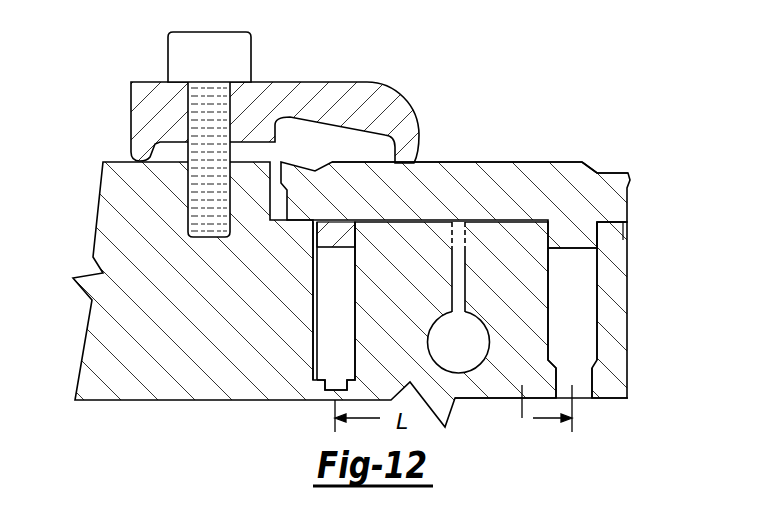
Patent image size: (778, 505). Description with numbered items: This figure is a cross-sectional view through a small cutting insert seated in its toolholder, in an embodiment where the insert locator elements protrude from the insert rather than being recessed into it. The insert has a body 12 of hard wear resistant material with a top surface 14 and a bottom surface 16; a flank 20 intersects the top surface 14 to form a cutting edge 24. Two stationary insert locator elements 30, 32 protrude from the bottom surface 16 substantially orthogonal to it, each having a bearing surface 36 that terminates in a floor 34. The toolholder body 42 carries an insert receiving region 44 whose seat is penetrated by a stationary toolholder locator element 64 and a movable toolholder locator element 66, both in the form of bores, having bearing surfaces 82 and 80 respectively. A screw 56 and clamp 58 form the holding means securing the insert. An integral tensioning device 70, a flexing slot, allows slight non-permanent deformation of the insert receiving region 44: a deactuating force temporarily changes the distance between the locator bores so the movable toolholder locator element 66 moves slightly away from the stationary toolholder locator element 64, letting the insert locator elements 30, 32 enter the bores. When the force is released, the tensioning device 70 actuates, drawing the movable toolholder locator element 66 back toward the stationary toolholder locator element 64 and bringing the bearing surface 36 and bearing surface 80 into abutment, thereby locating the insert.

The body 12 is at (420, 214).
The top surface 14 is at (544, 152).
The bottom surface 16 is at (624, 231).
The flank 20 is at (632, 177).
The cutting edge 24 is at (633, 167).
The stationary insert locator element 30 is at (557, 250).
The stationary insert locator element 32 is at (348, 250).
The floor 34 is at (330, 257).
The bearing surface 36 is at (305, 246).
The toolholder body 42 is at (100, 197).
The insert receiving region 44 is at (542, 417).
The screw 56 is at (218, 32).
The clamp 58 is at (351, 82).
The stationary toolholder locator element 64 is at (310, 368).
The movable toolholder locator element 66 is at (580, 350).
The tensioning device 70 is at (470, 371).
The bearing surface 80 is at (590, 245).
The bearing surface 82 is at (326, 234).